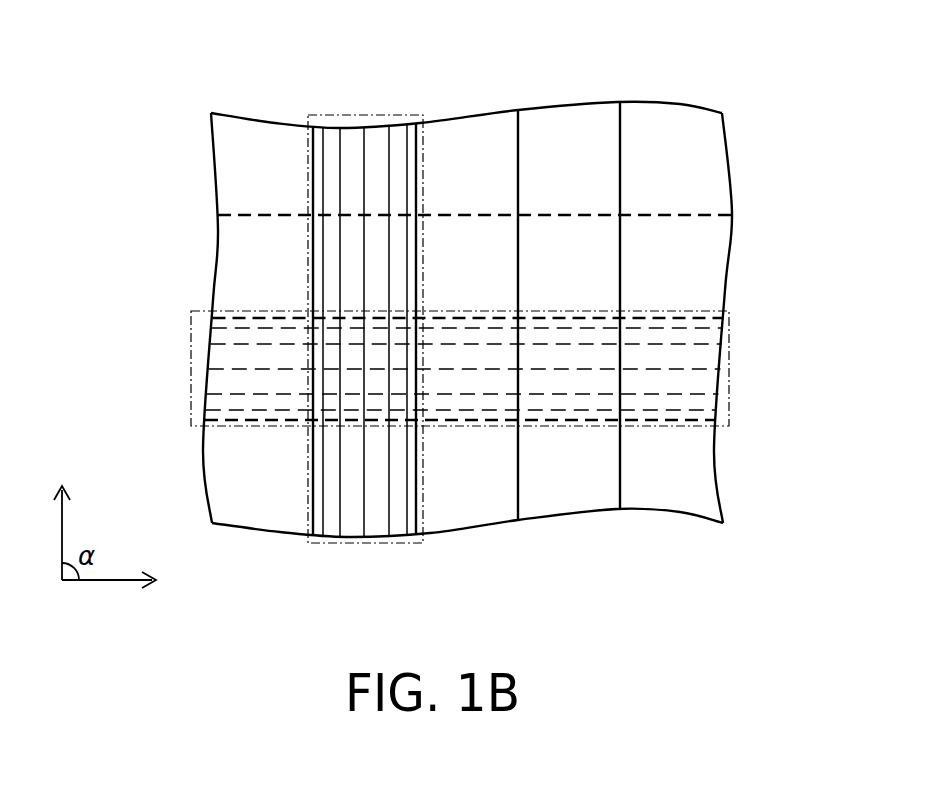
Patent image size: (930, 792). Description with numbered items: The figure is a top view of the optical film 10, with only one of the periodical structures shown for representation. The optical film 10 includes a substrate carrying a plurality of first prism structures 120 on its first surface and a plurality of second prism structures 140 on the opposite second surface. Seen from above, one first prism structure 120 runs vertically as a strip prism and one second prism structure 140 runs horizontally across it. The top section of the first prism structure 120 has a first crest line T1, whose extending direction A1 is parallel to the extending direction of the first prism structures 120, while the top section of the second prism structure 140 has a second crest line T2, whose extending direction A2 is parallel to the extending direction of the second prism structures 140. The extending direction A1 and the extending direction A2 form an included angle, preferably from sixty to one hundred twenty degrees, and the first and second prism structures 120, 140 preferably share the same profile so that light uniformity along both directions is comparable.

The optical film 10 is at (153, 70).
The first prism structure 120 is at (353, 113).
The second prism structure 140 is at (731, 352).
The first crest line T1 is at (365, 168).
The second crest line T2 is at (683, 369).
The extending direction A1 is at (60, 468).
The extending direction A2 is at (177, 581).